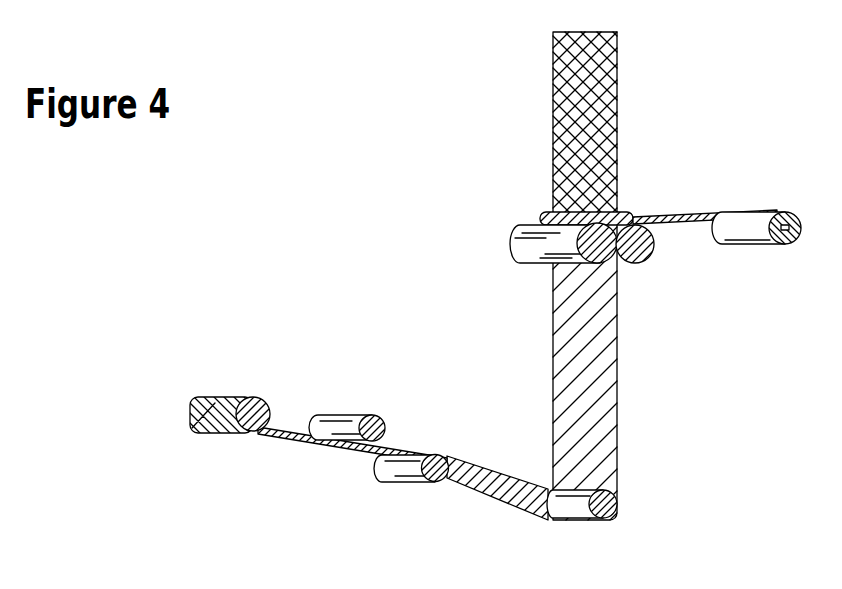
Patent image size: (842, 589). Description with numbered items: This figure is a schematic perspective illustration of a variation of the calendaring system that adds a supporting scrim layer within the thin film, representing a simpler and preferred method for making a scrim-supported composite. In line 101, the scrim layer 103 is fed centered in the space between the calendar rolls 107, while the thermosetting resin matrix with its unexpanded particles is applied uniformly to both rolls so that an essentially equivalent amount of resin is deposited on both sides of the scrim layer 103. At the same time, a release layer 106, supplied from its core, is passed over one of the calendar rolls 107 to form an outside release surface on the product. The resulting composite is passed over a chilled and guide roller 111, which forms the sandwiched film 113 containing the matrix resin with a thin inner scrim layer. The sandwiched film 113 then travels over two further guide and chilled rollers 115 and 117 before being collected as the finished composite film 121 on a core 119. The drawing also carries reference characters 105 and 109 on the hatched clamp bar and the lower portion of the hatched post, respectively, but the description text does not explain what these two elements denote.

The line 101 is at (478, 182).
The scrim layer 103 is at (600, 100).
The clamp bar 105 is at (622, 208).
The release layer 106 is at (692, 210).
The calendar rolls 107 is at (588, 260).
The hatched post lower portion 109 is at (582, 363).
The chilled and guide roller 111 is at (617, 502).
The sandwiched film 113 is at (503, 488).
The guide and chilled roller 115 is at (403, 470).
The guide and chilled roller 117 is at (337, 420).
The core 119 is at (227, 398).
The composite film 121 is at (192, 423).